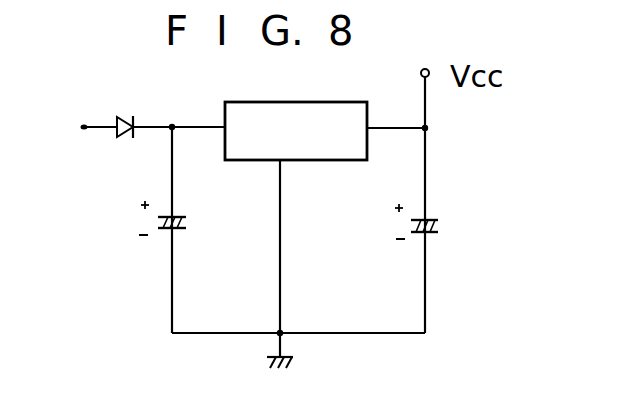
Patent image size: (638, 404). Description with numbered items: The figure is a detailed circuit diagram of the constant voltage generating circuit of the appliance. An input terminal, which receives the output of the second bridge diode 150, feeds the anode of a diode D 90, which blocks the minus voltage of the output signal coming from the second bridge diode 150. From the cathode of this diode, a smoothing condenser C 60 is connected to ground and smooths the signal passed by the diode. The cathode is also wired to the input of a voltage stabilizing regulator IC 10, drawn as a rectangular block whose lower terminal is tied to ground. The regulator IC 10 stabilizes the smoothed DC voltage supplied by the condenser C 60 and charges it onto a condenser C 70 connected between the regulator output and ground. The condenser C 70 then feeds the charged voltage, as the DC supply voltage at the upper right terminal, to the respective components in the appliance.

The second bridge diode 150 is at (87, 147).
The diode 90 is at (165, 108).
The voltage stabilizing regulator 10 is at (325, 131).
The smoothing condenser 60 is at (186, 221).
The condenser 70 is at (441, 225).